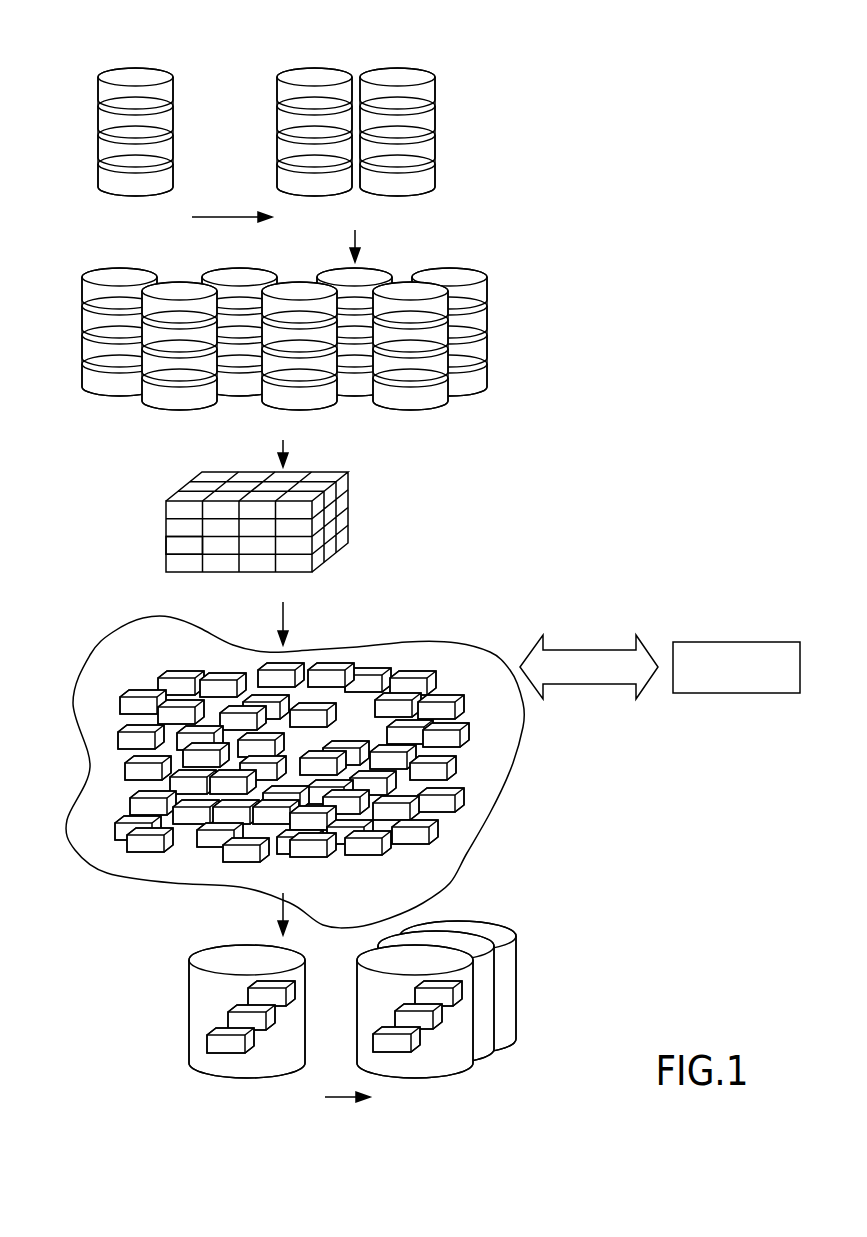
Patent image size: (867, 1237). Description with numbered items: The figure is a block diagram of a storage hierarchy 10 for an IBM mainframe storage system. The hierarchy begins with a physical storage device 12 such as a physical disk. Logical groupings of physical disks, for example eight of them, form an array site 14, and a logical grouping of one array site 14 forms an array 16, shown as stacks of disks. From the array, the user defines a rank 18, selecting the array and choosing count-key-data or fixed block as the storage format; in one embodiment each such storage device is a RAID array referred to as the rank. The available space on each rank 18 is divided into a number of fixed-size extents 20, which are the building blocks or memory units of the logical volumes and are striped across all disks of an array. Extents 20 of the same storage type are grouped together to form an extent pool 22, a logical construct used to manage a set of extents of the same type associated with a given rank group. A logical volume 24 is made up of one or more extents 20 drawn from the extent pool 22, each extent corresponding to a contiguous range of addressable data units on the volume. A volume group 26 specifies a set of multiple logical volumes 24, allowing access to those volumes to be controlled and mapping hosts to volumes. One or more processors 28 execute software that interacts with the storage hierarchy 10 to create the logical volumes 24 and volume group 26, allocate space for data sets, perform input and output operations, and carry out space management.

The storage hierarchy 10 is at (717, 183).
The physical storage device 12 is at (78, 72).
The array site 14 is at (478, 128).
The array 16 is at (520, 300).
The rank 18 is at (112, 466).
The extents 20 is at (156, 548).
The extent pool 22 is at (66, 730).
The logical volume 24 is at (158, 990).
The volume group 26 is at (540, 905).
The processors 28 is at (760, 620).